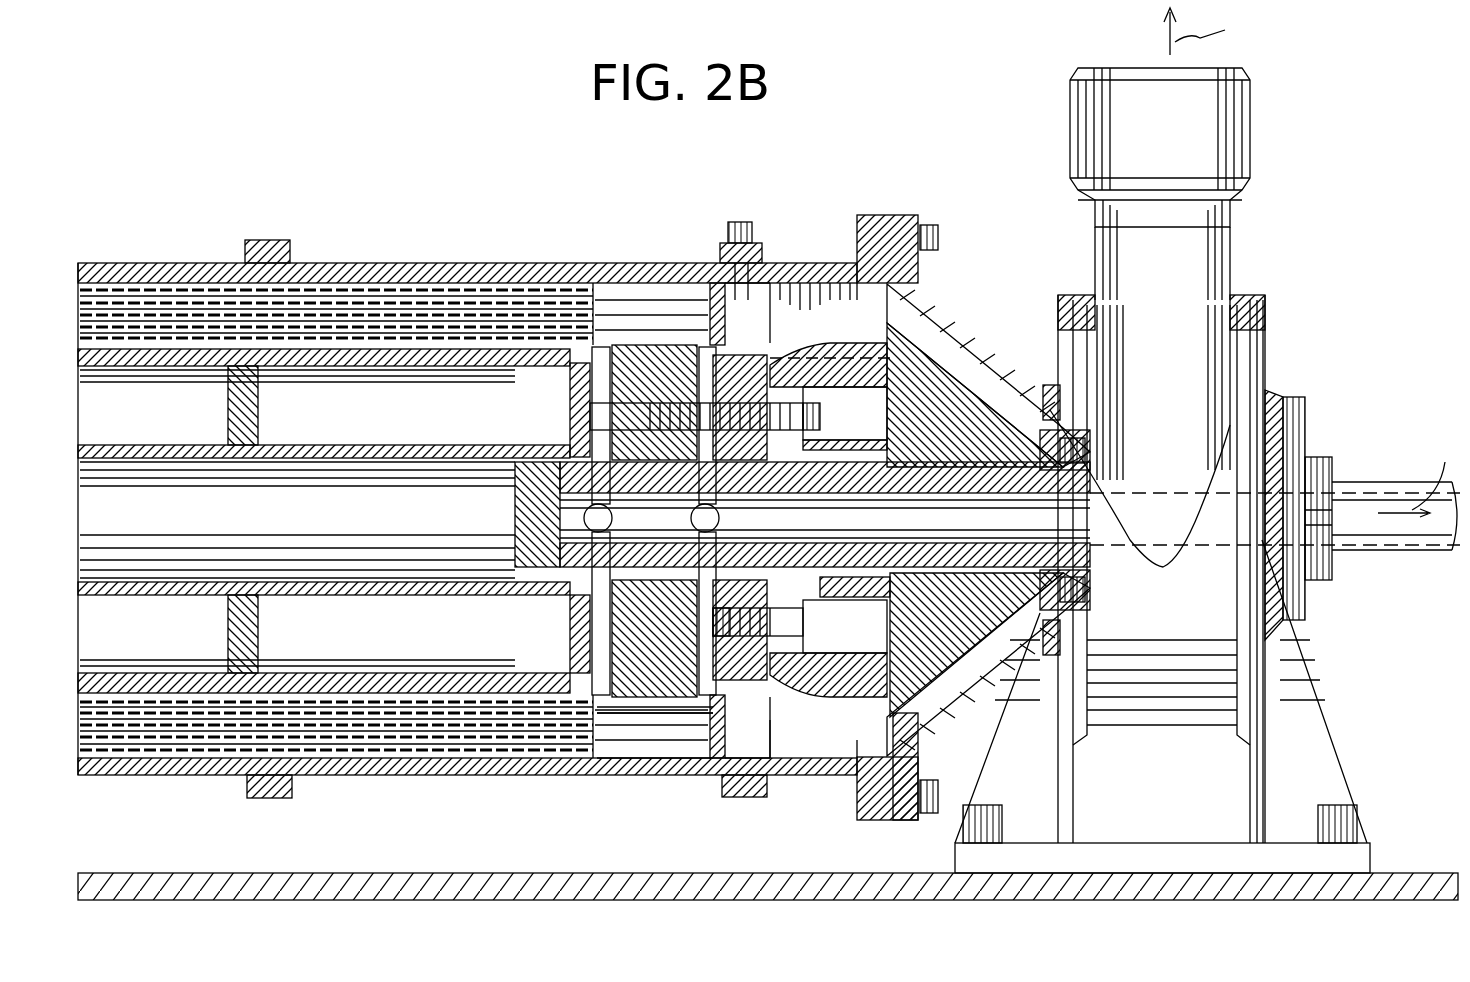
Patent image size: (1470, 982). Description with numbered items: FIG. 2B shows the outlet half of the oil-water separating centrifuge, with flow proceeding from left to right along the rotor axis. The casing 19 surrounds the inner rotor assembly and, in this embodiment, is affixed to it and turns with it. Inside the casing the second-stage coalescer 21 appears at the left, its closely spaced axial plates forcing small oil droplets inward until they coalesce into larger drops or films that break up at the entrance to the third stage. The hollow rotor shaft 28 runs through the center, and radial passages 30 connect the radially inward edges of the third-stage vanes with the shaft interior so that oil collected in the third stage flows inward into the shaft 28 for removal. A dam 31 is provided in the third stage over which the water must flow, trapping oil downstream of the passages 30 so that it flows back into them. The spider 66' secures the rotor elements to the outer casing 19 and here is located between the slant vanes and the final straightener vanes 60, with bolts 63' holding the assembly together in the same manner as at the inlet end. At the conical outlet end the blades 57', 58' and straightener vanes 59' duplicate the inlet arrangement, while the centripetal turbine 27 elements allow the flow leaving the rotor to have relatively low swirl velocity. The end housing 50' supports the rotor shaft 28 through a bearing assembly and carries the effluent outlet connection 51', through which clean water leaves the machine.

The casing 19 is at (497, 238).
The coalescer 21 is at (378, 283).
The rotor shaft 28 is at (462, 553).
The radial passages 30 is at (690, 520).
The spider 66' is at (668, 520).
The dam 31 is at (886, 335).
The straightener vanes 59' is at (779, 522).
The bolts 63' is at (733, 519).
The blades 58' is at (988, 375).
The centripetal turbine 27 is at (980, 672).
The blades 57' is at (1095, 520).
The end housing 50' is at (1171, 584).
The effluent outlet connection 51' is at (1260, 262).
The vanes 60 is at (615, 735).